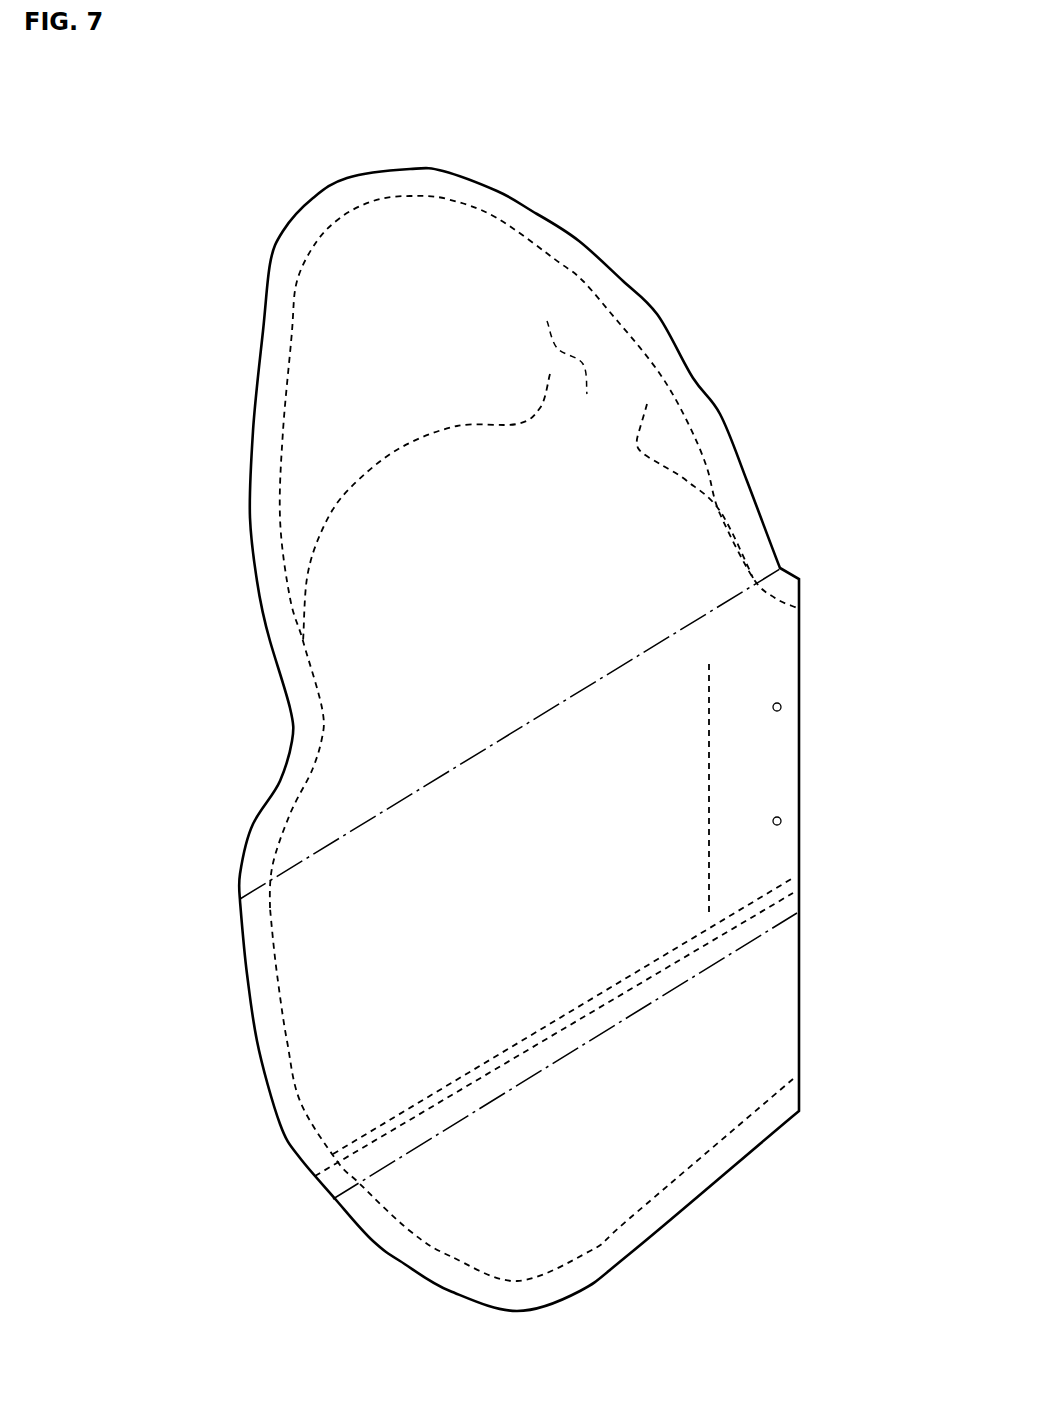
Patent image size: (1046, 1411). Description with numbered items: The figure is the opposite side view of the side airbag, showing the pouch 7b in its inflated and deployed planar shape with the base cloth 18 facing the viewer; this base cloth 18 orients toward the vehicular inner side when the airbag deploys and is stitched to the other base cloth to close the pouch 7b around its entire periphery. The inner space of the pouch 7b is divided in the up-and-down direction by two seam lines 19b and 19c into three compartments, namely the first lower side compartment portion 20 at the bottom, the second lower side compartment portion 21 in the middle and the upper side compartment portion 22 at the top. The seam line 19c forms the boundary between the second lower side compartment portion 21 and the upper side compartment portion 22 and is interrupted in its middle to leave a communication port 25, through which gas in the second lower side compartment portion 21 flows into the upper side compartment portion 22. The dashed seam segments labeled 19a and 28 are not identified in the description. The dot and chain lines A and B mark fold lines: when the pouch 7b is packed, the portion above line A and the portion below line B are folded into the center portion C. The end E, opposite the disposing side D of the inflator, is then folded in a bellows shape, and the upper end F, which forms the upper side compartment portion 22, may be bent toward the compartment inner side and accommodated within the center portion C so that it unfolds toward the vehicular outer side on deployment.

The pouch 7b is at (660, 312).
The base cloth 18 is at (683, 380).
The peripheral seam portion 19a is at (283, 423).
The seam line 19b is at (752, 900).
The seam line 19c is at (323, 527).
The first lower side compartment portion 20 is at (570, 1142).
The second lower side compartment portion 21 is at (492, 669).
The upper side compartment portion 22 is at (372, 344).
The communication port 25 is at (559, 339).
The seam end portion 28 is at (545, 387).
The dot and chain line A is at (310, 852).
The dot and chain line B is at (425, 1145).
The center portion C is at (518, 907).
The disposing side D is at (772, 762).
The end E is at (305, 1027).
The upper end F is at (422, 217).